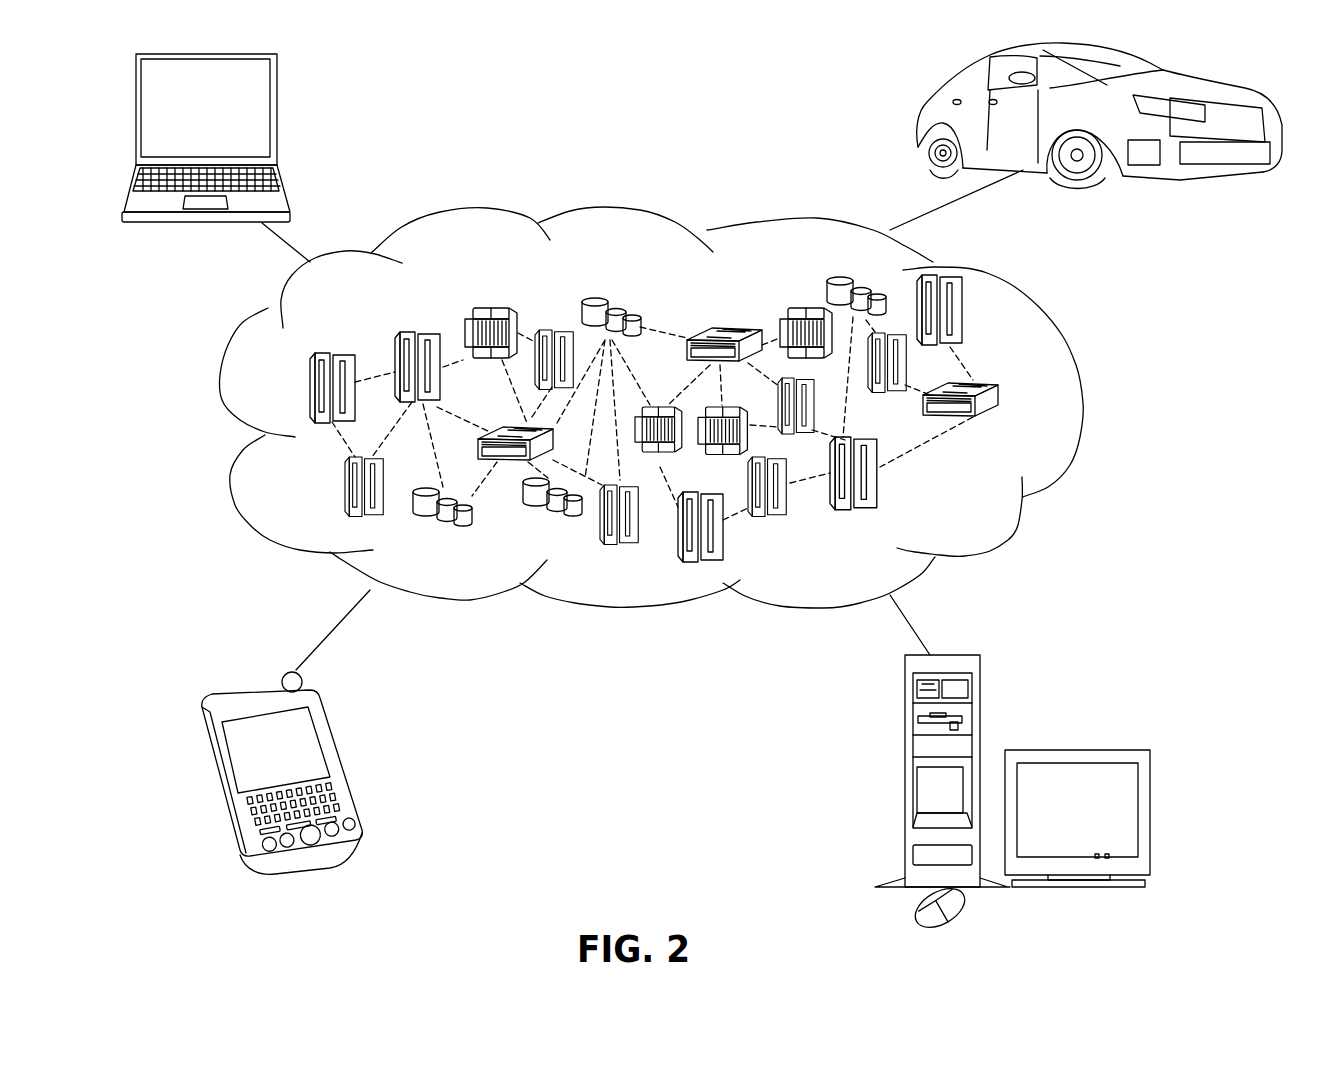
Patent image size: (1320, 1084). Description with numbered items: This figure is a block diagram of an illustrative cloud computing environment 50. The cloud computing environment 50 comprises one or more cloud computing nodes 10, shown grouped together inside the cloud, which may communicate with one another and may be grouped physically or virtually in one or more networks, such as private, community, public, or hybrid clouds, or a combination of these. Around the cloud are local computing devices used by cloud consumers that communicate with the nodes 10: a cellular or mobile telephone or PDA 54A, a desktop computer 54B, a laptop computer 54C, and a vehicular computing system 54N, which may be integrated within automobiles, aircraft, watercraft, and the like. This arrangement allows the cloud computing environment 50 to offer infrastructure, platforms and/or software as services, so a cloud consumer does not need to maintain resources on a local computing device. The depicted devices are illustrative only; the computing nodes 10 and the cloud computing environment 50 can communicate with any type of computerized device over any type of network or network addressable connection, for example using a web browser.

The cloud computing nodes 10 is at (979, 501).
The cloud computing environment 50 is at (1072, 402).
The cellular telephone or PDA 54A is at (328, 732).
The desktop computer 54B is at (902, 717).
The laptop computer 54C is at (277, 92).
The vehicular computing system 54N is at (920, 108).